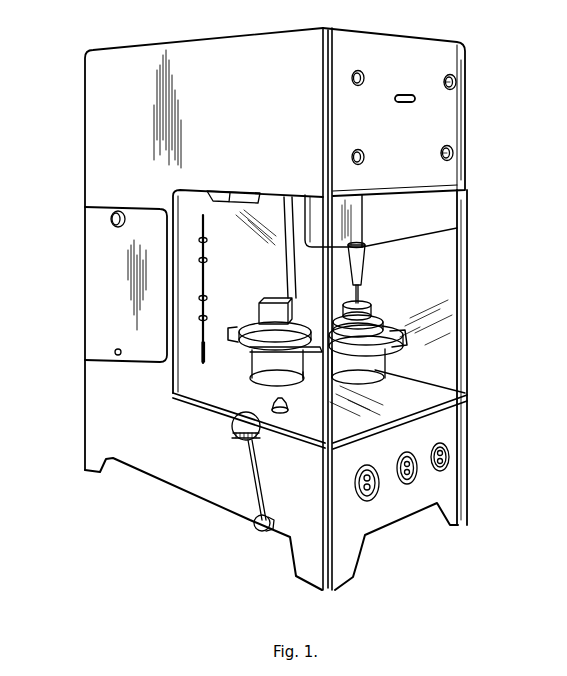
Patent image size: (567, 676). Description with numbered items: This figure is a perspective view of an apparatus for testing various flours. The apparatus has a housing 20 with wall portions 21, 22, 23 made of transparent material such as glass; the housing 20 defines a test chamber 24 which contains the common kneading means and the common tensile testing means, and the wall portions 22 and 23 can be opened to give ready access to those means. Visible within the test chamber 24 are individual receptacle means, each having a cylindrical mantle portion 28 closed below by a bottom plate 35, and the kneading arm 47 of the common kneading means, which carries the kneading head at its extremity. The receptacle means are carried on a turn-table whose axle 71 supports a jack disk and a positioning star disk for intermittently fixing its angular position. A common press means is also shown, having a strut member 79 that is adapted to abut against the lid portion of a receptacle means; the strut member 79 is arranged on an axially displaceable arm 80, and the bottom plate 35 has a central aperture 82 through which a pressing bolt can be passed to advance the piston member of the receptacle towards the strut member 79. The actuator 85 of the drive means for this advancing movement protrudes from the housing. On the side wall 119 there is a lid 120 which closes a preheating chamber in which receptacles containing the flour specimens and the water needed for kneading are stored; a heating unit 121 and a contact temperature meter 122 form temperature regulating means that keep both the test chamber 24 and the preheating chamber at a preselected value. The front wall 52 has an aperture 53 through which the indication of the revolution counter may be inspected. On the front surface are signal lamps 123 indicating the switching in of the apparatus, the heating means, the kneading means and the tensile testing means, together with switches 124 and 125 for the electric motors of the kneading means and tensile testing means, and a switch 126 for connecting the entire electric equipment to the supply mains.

The housing 20 is at (100, 368).
The wall portion 21 is at (213, 408).
The wall portion 22 is at (430, 410).
The wall portion 23 is at (438, 383).
The test chamber 24 is at (440, 315).
The mantle portion 28 is at (257, 370).
The bottom plate 35 is at (301, 381).
The kneading arm 47 is at (365, 270).
The front wall 52 is at (405, 54).
The aperture 53 is at (412, 94).
The axle 71 is at (362, 247).
The strut member 79 is at (258, 307).
The axially displaceable arm 80 is at (350, 254).
The central aperture 82 is at (274, 404).
The actuator 85 is at (252, 482).
The side wall 119 is at (136, 73).
The lid 120 is at (95, 268).
The heating unit 121 is at (241, 202).
The contact temperature meter 122 is at (200, 226).
The signal lamps 123 is at (453, 140).
The switch 124 is at (372, 500).
The switch 125 is at (407, 490).
The switch 126 is at (446, 468).